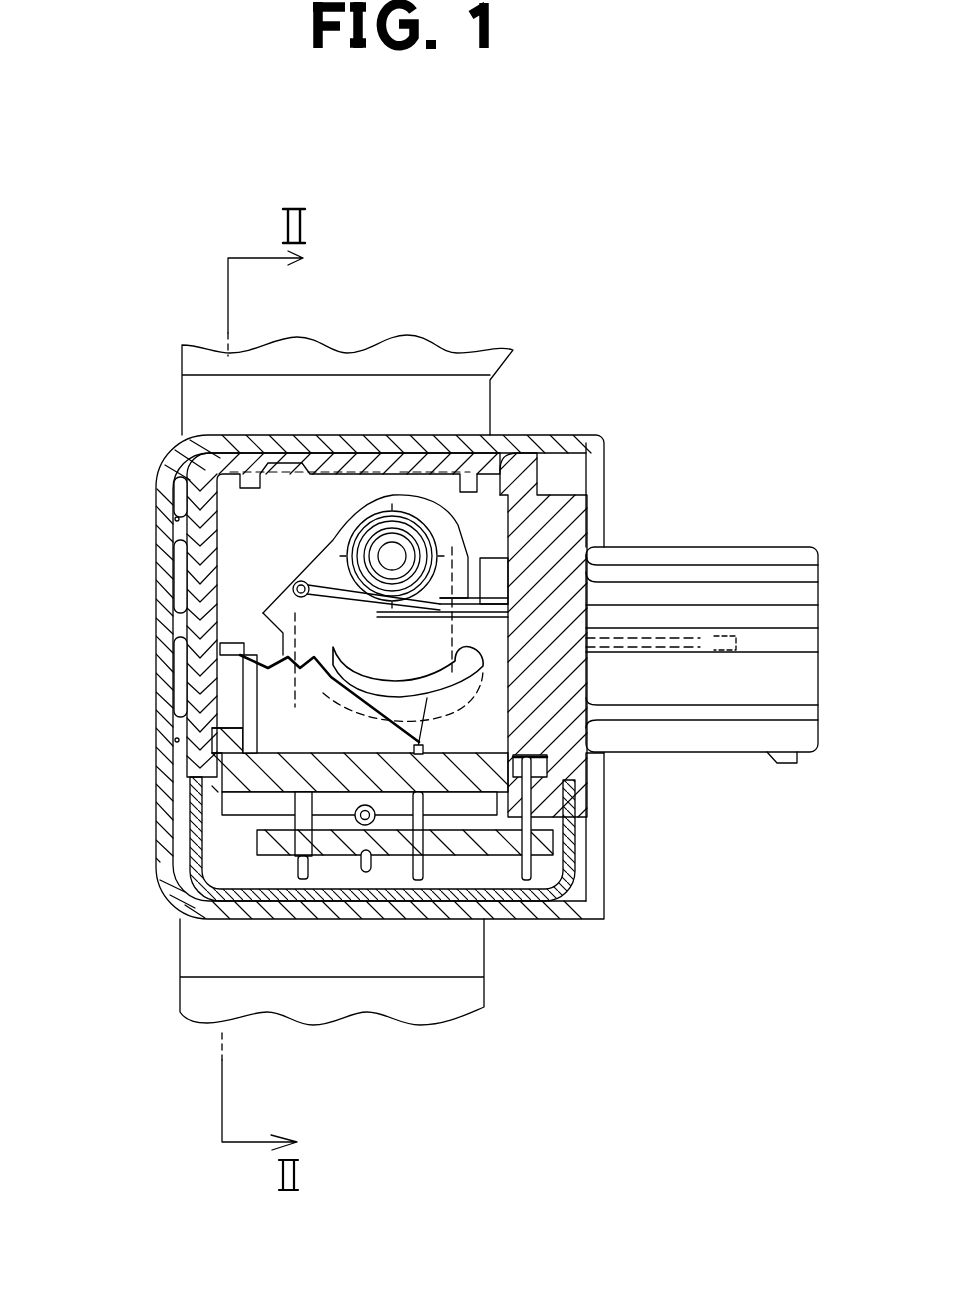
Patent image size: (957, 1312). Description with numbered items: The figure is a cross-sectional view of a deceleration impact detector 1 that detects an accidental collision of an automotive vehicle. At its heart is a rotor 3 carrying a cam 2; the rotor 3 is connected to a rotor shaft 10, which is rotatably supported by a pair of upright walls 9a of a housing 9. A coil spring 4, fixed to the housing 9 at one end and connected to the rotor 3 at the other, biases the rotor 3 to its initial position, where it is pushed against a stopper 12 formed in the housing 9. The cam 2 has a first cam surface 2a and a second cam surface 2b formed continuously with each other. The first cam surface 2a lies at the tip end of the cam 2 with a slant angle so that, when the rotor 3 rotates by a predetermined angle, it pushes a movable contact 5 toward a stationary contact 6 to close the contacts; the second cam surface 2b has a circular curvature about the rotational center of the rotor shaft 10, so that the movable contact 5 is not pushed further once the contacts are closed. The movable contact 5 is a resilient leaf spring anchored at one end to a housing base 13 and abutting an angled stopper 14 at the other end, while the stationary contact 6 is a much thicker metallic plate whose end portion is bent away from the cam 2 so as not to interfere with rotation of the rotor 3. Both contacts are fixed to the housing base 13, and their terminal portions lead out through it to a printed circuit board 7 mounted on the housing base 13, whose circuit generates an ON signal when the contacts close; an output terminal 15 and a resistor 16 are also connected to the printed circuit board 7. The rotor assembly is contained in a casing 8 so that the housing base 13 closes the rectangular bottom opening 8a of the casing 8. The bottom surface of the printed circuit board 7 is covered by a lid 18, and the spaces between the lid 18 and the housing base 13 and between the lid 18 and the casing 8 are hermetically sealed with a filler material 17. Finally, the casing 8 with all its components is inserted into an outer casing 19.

The deceleration impact detector 1 is at (696, 327).
The cam 2 is at (415, 665).
The first cam surface 2a is at (205, 678).
The second cam surface 2b is at (425, 712).
The rotor 3 is at (268, 598).
The coil spring 4 is at (483, 530).
The movable contact 5 is at (333, 700).
The stationary contact 6 is at (240, 705).
The printed circuit board 7 is at (500, 843).
The casing 8 is at (190, 487).
The rectangular bottom opening 8a is at (230, 746).
The housing 9 is at (224, 760).
The upright walls 9a is at (490, 573).
The rotor shaft 10 is at (392, 556).
The stopper 12 is at (565, 520).
The housing base 13 is at (285, 773).
The angled stopper 14 is at (248, 655).
The output terminal 15 is at (698, 645).
The resistor 16 is at (372, 826).
The filler material 17 is at (545, 770).
The lid 18 is at (205, 868).
The outer casing 19 is at (380, 442).